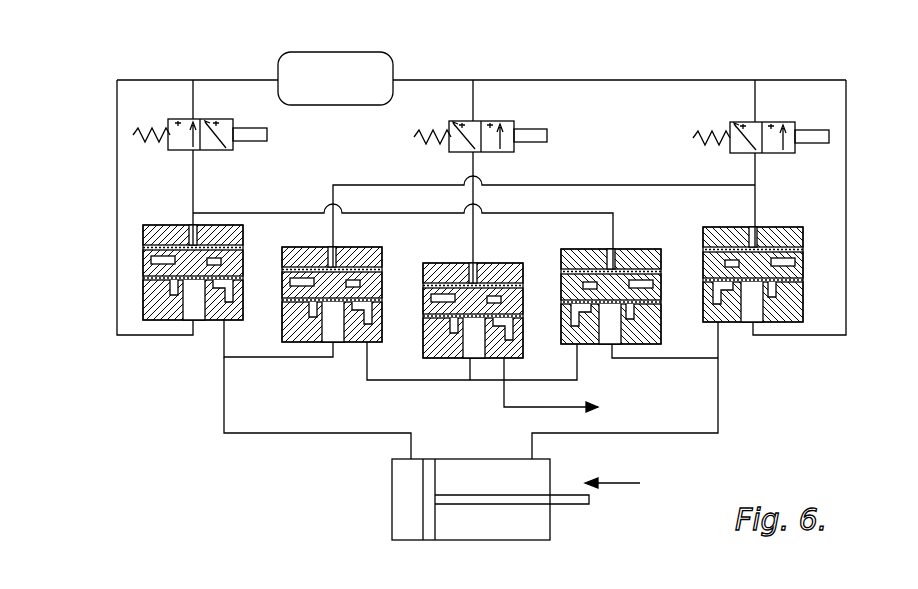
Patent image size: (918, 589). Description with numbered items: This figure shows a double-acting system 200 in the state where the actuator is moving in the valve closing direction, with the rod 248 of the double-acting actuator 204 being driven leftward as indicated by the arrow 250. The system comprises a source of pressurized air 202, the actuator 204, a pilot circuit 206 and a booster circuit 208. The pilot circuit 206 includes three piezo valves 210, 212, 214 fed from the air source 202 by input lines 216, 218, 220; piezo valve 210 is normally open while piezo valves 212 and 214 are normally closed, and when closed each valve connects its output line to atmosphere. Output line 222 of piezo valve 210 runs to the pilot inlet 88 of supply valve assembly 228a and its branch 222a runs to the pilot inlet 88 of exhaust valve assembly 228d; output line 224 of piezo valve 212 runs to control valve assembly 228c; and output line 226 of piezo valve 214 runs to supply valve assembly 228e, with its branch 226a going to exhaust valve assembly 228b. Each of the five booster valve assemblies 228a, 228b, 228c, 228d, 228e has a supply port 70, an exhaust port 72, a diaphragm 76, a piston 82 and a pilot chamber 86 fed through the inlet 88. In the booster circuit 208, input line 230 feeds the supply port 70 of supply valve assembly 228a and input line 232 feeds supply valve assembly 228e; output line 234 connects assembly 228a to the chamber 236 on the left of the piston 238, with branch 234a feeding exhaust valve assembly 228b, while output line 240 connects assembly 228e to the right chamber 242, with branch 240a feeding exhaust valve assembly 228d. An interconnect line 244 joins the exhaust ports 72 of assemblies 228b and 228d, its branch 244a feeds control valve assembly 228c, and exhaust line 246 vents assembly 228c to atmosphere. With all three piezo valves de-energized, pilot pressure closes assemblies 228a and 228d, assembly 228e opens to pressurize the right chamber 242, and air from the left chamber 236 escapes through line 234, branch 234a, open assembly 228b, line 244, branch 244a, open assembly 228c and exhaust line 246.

The double-acting system 200 is at (136, 437).
The source of pressurized air 202 is at (332, 62).
The double-acting actuator 204 is at (509, 500).
The pilot circuit 206 is at (578, 78).
The booster circuit 208 is at (832, 342).
The piezo valve 210 is at (218, 152).
The piezo valve 212 is at (514, 126).
The piezo valve 214 is at (782, 124).
The input line 216 is at (196, 101).
The input line 218 is at (472, 101).
The input line 220 is at (755, 99).
The output line 222 is at (193, 176).
The branch of output line 222a is at (223, 212).
The output line 224 is at (472, 163).
The output line 226 is at (757, 172).
The branch of output line 226a is at (608, 186).
The supply valve assembly 228a is at (137, 253).
The exhaust valve assembly 228b is at (395, 282).
The control valve assembly 228c is at (536, 288).
The exhaust valve assembly 228d is at (673, 276).
The supply valve assembly 228e is at (815, 249).
The input line 230 is at (116, 124).
The input line 232 is at (847, 218).
The output line 234 is at (244, 434).
The branch 234a is at (252, 358).
The chamber 236 is at (400, 502).
The piston 238 is at (428, 475).
The output line 240 is at (720, 405).
The branch 240a is at (655, 358).
The chamber 242 is at (538, 480).
The interconnect line 244 is at (470, 382).
The branch 244a is at (502, 400).
The exhaust line 246 is at (546, 407).
The rod 248 is at (576, 506).
The arrow 250 is at (632, 483).
The supply port 70 is at (200, 322).
The exhaust port 72 is at (226, 322).
The diaphragm 76 is at (180, 318).
The piston 82 is at (162, 285).
The pilot chamber 86 is at (178, 222).
The inlet 88 is at (194, 224).